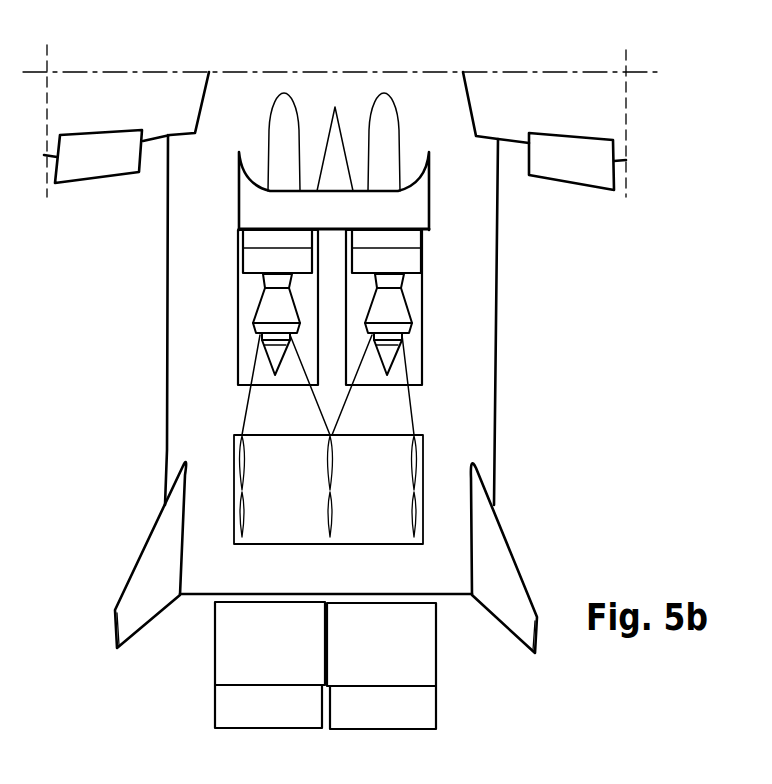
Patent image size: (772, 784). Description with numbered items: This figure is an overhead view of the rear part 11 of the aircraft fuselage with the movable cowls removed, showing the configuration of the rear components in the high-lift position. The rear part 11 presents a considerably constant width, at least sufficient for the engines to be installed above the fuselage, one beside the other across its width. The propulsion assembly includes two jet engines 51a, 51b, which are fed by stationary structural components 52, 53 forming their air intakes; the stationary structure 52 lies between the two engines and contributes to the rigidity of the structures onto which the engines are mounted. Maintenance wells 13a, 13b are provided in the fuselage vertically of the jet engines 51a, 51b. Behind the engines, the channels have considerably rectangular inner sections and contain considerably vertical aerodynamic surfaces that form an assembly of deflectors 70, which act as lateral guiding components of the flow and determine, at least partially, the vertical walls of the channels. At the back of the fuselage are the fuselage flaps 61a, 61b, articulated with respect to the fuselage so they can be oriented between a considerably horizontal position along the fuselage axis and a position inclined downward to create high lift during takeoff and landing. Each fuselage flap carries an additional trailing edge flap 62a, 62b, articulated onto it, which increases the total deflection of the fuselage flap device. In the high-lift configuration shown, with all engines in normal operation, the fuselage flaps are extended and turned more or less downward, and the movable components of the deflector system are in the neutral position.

The rear part of the fuselage 11 is at (130, 445).
The stationary structural component 52 is at (343, 145).
The stationary structural component 53 is at (247, 203).
The jet engine 51a is at (245, 257).
The jet engine 51b is at (412, 242).
The maintenance well 13a is at (248, 310).
The maintenance well 13b is at (417, 318).
The assembly of deflectors 70 is at (436, 447).
The fuselage flap 61a is at (232, 647).
The fuselage flap 61b is at (405, 652).
The additional trailing edge flap 62a is at (230, 707).
The additional trailing edge flap 62b is at (408, 706).